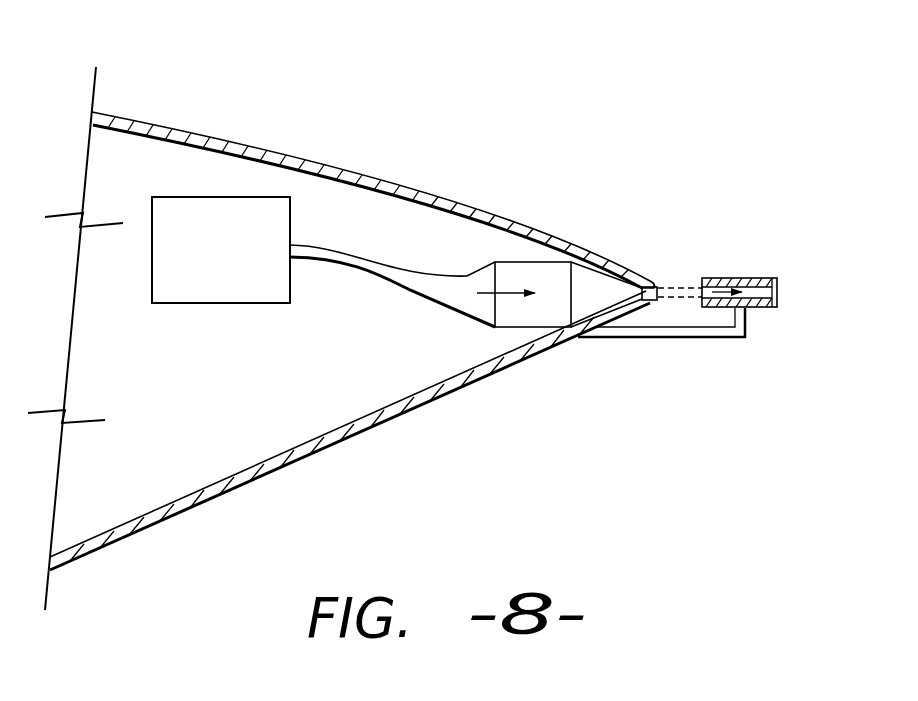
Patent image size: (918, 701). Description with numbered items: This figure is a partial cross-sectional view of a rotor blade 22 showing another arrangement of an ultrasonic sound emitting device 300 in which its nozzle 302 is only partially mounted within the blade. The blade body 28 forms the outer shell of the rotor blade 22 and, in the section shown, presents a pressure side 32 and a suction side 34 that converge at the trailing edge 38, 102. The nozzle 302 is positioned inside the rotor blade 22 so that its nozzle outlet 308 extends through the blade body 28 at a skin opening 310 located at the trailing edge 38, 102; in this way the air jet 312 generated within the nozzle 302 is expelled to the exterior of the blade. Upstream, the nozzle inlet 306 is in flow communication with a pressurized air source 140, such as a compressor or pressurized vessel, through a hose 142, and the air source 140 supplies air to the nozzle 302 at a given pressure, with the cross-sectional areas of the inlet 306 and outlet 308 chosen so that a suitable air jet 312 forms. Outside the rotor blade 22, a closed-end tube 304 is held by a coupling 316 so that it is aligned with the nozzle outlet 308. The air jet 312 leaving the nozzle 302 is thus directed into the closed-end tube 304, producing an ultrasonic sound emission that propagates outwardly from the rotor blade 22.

The rotor blade 22 is at (605, 101).
The blade body 28 is at (322, 157).
The suction side 34 is at (181, 133).
The pressure side 32 is at (345, 436).
The pressurized air source 140 is at (246, 258).
The hose 142 is at (432, 298).
The nozzle 302 is at (518, 252).
The nozzle inlet 306 is at (482, 284).
The ultrasonic sound emitting device 300 is at (620, 418).
The trailing edge 38 is at (650, 303).
The trailing edge 102 is at (633, 282).
The air jet 312 is at (677, 288).
The closed-end tube 304 is at (749, 275).
The nozzle outlet 308 is at (673, 296).
The coupling 316 is at (728, 341).
The skin opening 310 is at (605, 322).